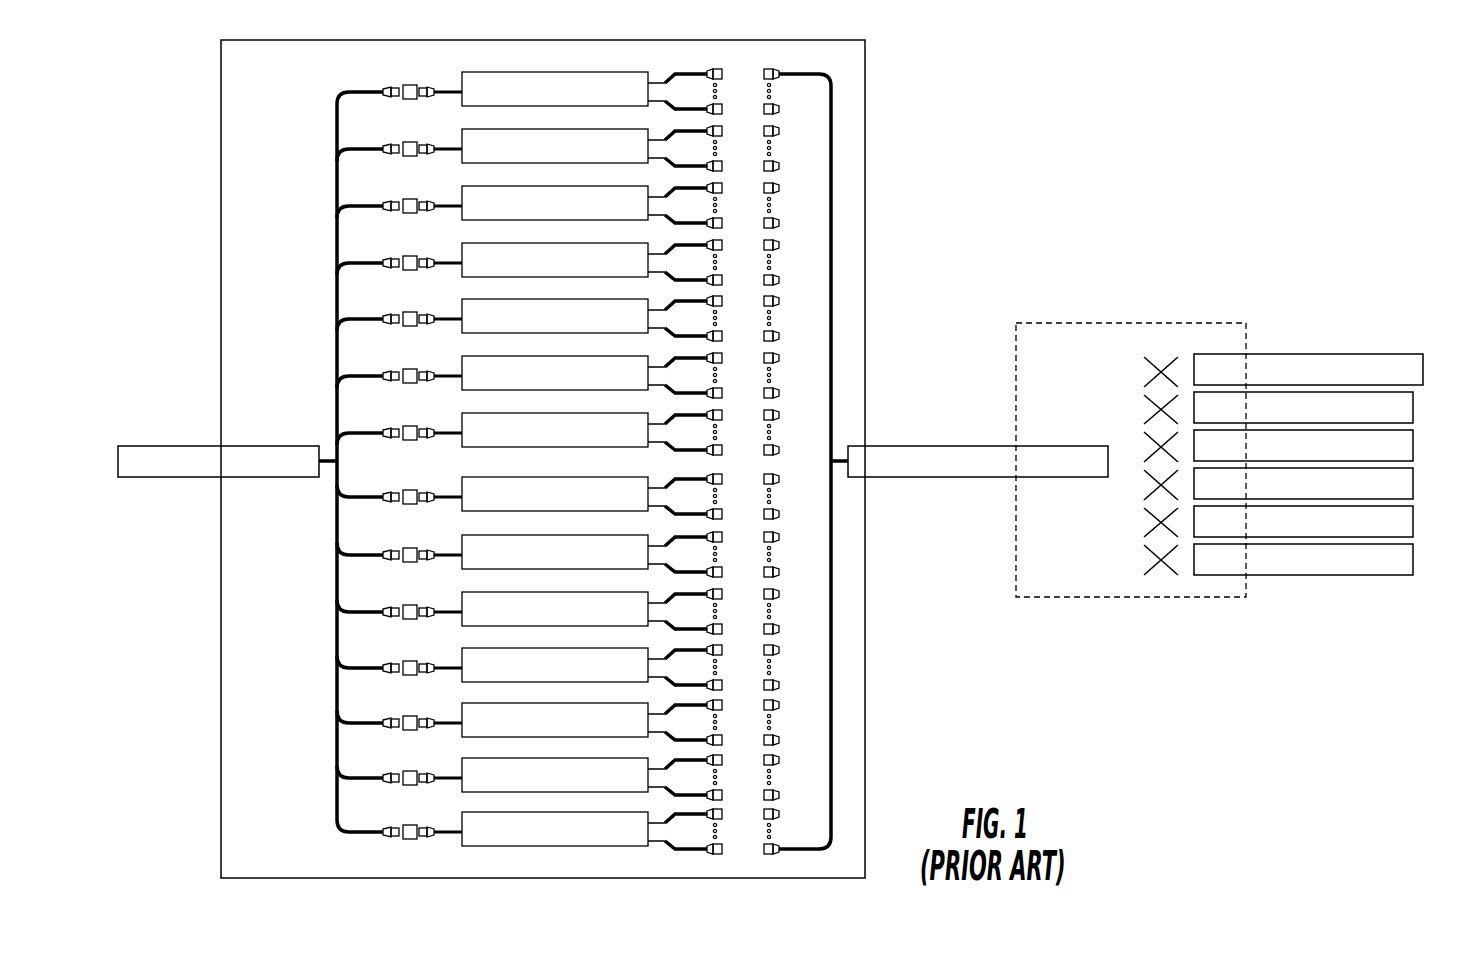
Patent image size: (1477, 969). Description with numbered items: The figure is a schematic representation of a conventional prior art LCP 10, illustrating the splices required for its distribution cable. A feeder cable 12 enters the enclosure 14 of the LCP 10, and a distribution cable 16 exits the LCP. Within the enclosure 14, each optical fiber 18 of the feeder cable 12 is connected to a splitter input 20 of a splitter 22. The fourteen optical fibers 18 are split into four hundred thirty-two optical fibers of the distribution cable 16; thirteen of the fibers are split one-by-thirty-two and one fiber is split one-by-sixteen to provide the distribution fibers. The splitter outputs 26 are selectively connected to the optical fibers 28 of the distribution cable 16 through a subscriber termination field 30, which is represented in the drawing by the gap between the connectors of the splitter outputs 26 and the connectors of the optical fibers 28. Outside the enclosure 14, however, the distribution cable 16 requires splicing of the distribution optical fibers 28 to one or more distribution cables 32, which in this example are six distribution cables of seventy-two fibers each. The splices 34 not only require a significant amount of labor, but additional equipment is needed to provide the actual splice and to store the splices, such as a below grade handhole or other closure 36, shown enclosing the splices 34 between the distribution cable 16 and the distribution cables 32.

The conventional LCP 10 is at (919, 115).
The feeder cable 12 is at (188, 446).
The enclosure 14 is at (866, 280).
The distribution cable 16 is at (933, 446).
The optical fiber 18 is at (365, 90).
The splitter input 20 is at (452, 90).
The splitter 22 is at (568, 72).
The splitter outputs 26 is at (683, 72).
The optical fibers 28 is at (797, 72).
The subscriber termination field 30 is at (738, 80).
The distribution cables 32 is at (1277, 354).
The splices 34 is at (1150, 358).
The closure 36 is at (1200, 323).